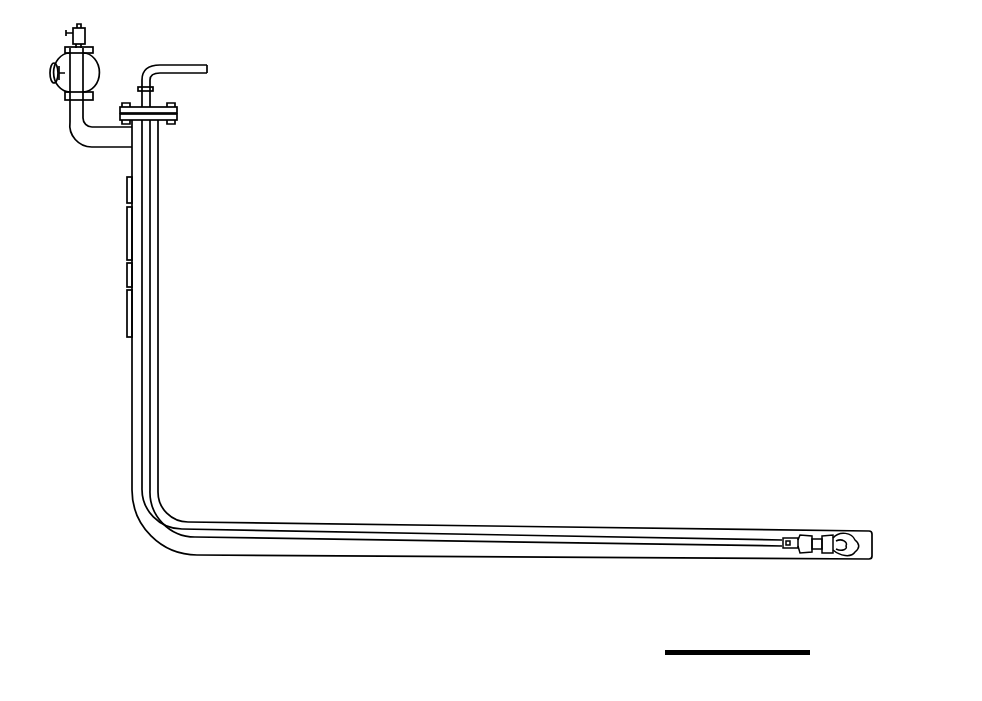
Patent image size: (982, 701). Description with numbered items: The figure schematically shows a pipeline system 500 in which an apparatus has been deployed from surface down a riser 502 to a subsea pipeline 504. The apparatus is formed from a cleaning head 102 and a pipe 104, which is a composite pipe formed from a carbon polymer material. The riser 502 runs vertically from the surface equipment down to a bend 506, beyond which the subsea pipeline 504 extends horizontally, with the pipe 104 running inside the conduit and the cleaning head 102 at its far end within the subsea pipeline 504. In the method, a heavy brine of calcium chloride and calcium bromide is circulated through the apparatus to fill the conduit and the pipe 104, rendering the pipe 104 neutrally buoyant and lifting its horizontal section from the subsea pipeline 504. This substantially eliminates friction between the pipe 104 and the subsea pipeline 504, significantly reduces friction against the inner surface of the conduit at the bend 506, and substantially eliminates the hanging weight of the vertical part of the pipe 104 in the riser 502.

The pipeline system 500 is at (496, 218).
The riser 502 is at (157, 270).
The subsea pipeline 504 is at (673, 527).
The bend 506 is at (175, 510).
The pipe 104 is at (518, 545).
The cleaning head 102 is at (813, 535).